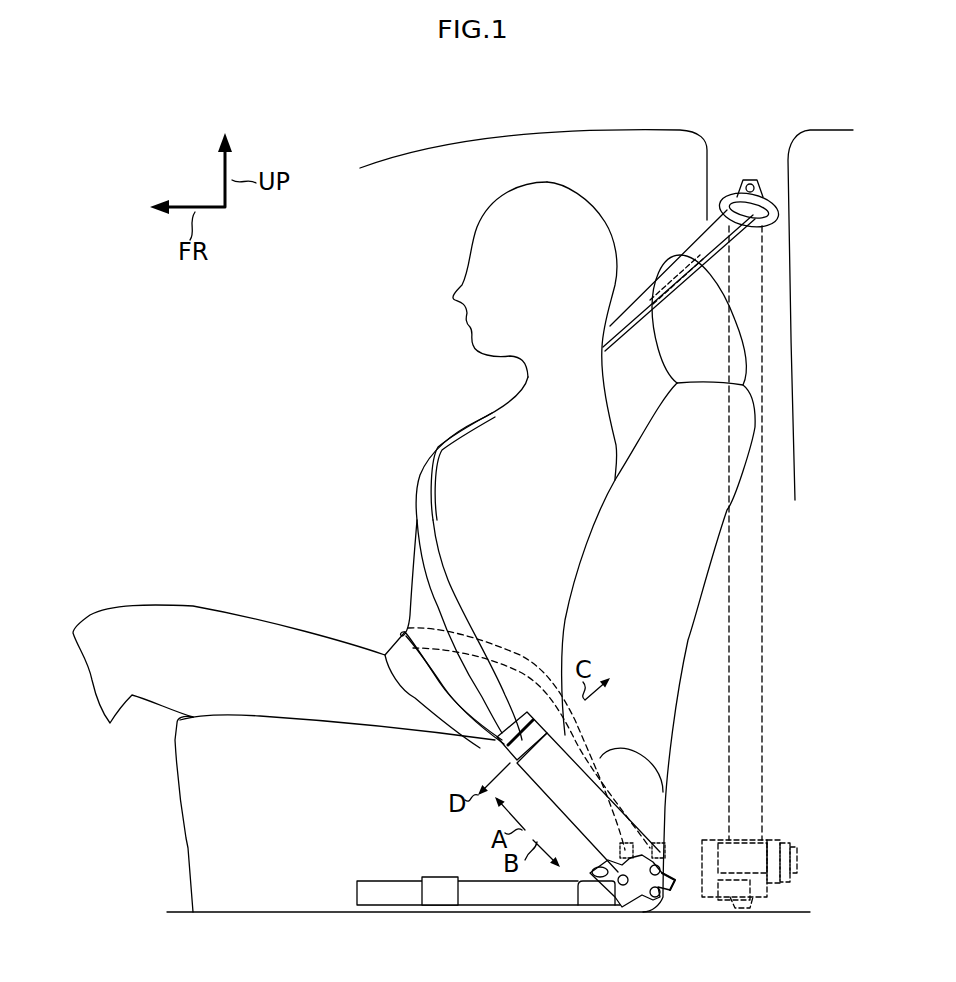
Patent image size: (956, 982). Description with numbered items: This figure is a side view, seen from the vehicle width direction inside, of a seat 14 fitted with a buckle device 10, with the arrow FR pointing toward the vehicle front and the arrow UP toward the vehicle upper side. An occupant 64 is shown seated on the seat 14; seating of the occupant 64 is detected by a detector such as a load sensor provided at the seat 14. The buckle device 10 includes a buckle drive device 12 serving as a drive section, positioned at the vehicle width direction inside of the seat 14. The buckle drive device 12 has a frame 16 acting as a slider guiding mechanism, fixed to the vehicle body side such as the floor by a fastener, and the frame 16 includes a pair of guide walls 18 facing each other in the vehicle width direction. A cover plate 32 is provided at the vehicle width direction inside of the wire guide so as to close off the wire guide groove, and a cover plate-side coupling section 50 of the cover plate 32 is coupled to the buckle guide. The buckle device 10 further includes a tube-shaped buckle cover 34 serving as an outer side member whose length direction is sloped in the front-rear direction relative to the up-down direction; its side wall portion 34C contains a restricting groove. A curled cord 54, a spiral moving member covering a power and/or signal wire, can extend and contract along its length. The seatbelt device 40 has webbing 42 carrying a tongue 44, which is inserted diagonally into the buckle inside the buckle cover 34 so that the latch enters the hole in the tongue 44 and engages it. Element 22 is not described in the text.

The buckle device 10 is at (425, 804).
The buckle drive device 12 is at (440, 860).
The seat 14 is at (707, 612).
The frame 16 is at (520, 905).
The guide walls 18 is at (493, 900).
The slide bracket 22 is at (420, 878).
The cover plate 32 is at (676, 886).
The buckle cover 34 is at (553, 760).
The wall portion 34C is at (613, 763).
The seatbelt device 40 is at (784, 717).
The webbing 42 is at (430, 462).
The tongue 44 is at (495, 760).
The cover plate-side coupling section 50 is at (580, 880).
The curled cord 54 is at (672, 874).
The occupant 64 is at (473, 450).